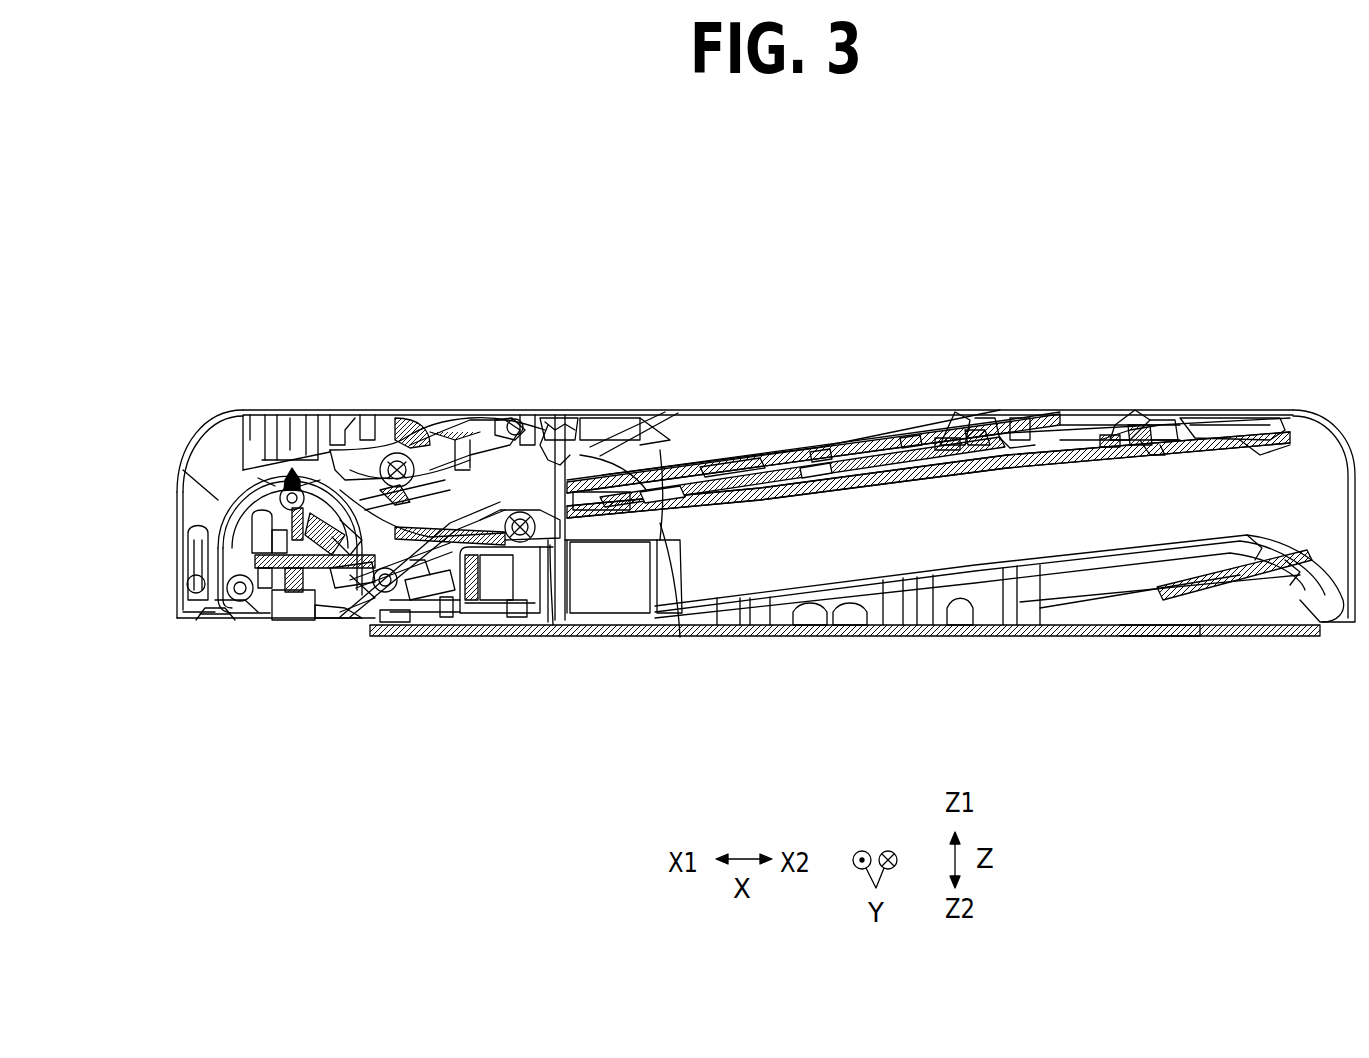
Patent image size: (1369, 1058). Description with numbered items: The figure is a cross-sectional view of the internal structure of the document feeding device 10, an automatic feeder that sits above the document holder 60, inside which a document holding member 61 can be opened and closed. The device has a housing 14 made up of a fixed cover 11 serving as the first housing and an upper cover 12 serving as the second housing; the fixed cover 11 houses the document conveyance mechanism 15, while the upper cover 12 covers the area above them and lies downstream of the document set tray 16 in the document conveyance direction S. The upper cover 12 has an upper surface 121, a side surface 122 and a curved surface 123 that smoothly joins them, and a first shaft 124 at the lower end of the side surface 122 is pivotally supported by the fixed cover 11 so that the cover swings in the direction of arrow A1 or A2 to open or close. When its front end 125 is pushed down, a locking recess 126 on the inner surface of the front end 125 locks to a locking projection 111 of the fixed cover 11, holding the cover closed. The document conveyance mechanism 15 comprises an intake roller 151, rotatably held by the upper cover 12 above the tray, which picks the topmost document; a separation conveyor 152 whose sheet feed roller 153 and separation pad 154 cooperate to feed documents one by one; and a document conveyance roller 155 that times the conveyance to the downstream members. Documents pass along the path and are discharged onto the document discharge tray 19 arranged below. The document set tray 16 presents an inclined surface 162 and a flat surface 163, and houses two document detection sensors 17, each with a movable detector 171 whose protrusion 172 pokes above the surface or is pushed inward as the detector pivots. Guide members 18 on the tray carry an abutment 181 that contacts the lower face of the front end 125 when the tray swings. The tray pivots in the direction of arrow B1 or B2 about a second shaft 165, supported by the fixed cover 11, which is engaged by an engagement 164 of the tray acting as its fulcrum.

The document feeding device 10 is at (430, 400).
The fixed cover 11 is at (175, 605).
The upper cover 12 is at (407, 403).
The housing 14 is at (1310, 408).
The document conveyance mechanism 15 is at (233, 490).
The document set tray 16 is at (1016, 410).
The document detection sensor 17 is at (898, 325).
The guide member 18 is at (752, 428).
The document discharge tray 19 is at (978, 562).
The document holder 60 is at (1245, 640).
The document holding member 61 is at (1160, 640).
The locking projection 111 is at (531, 410).
The upper surface 121 is at (368, 408).
The side surface 122 is at (177, 488).
The curved surface 123 is at (205, 408).
The first shaft 124 is at (208, 622).
The front end 125 is at (582, 410).
The locking recess 126 is at (558, 410).
The intake roller 151 is at (497, 408).
The separation conveyor 152 is at (476, 697).
The sheet feed roller 153 is at (455, 625).
The separation pad 154 is at (412, 622).
The document conveyance roller 155 is at (253, 490).
The inclined surface 162 is at (862, 428).
The flat surface 163 is at (1262, 408).
The engagement 164 is at (575, 630).
The second shaft 165 is at (532, 630).
The movable detector 171 is at (938, 438).
The protrusion 172 is at (966, 428).
The abutment 181 is at (675, 635).
The arrow A1 is at (315, 368).
The arrow A2 is at (328, 389).
The arrow B1 is at (1097, 392).
The arrow B2 is at (1067, 389).
The document conveyance direction S is at (680, 376).